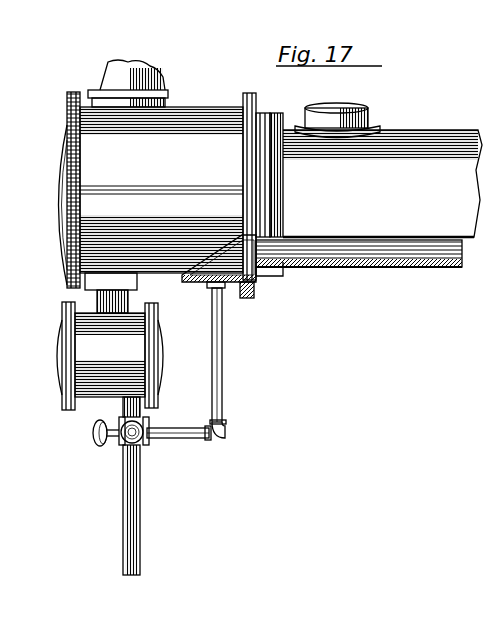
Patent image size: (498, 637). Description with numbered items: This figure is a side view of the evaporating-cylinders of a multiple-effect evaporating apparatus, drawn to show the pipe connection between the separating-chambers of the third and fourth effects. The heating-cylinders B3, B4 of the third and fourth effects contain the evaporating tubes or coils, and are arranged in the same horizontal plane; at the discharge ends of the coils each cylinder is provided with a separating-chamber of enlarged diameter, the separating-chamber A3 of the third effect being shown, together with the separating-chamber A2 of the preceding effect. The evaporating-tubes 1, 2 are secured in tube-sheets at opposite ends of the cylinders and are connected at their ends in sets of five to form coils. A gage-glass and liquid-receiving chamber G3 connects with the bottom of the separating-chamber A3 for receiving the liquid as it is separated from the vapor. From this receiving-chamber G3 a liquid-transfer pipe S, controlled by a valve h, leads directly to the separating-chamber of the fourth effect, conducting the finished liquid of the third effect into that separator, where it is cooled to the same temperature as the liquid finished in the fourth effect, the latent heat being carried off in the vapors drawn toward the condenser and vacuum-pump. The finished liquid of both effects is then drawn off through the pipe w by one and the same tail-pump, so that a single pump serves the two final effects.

The separating-chamber A3 is at (165, 170).
The separating-chamber A2 is at (238, 264).
The heating-cylinder B3 is at (352, 184).
The heating-cylinder B4 is at (352, 285).
The gage-glass and liquid-receiving chamber G3 is at (123, 360).
The liquid-transfer pipe S is at (222, 360).
The valve h is at (100, 446).
The pipe w is at (141, 512).
The evaporating-tube 1 is at (157, 439).
The evaporating-tube 2 is at (230, 449).